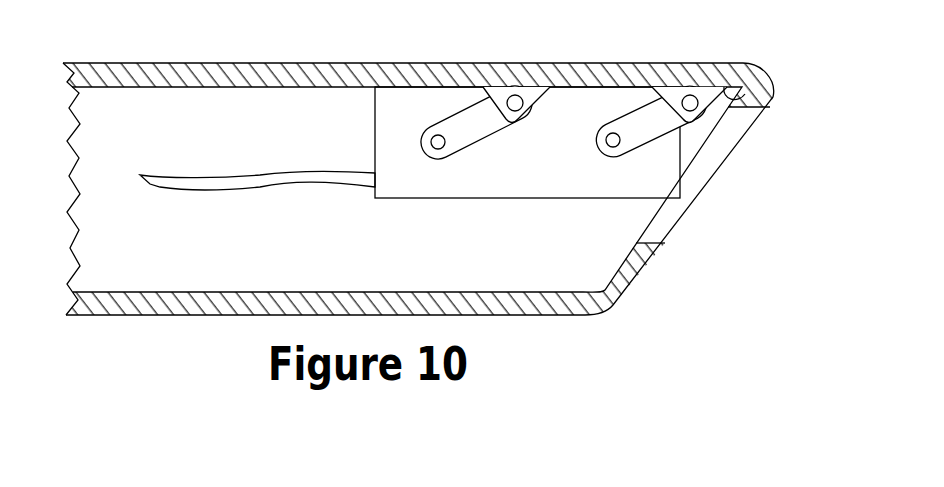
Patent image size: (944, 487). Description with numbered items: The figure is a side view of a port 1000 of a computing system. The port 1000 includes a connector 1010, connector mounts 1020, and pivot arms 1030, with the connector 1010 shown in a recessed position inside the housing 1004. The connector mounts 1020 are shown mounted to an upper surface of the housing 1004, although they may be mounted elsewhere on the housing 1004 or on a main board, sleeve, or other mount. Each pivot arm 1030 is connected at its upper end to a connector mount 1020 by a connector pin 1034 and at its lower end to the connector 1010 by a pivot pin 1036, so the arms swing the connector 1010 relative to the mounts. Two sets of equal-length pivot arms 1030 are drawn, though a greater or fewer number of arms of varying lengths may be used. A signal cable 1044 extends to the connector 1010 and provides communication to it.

The port 1000 is at (422, 158).
The housing 1004 is at (582, 62).
The connector 1010 is at (524, 198).
The connector mounts 1020 is at (517, 123).
The pivot arms 1030 is at (470, 102).
The connector pins 1034 is at (514, 95).
The pivot pins 1036 is at (438, 150).
The signal cable 1044 is at (214, 175).